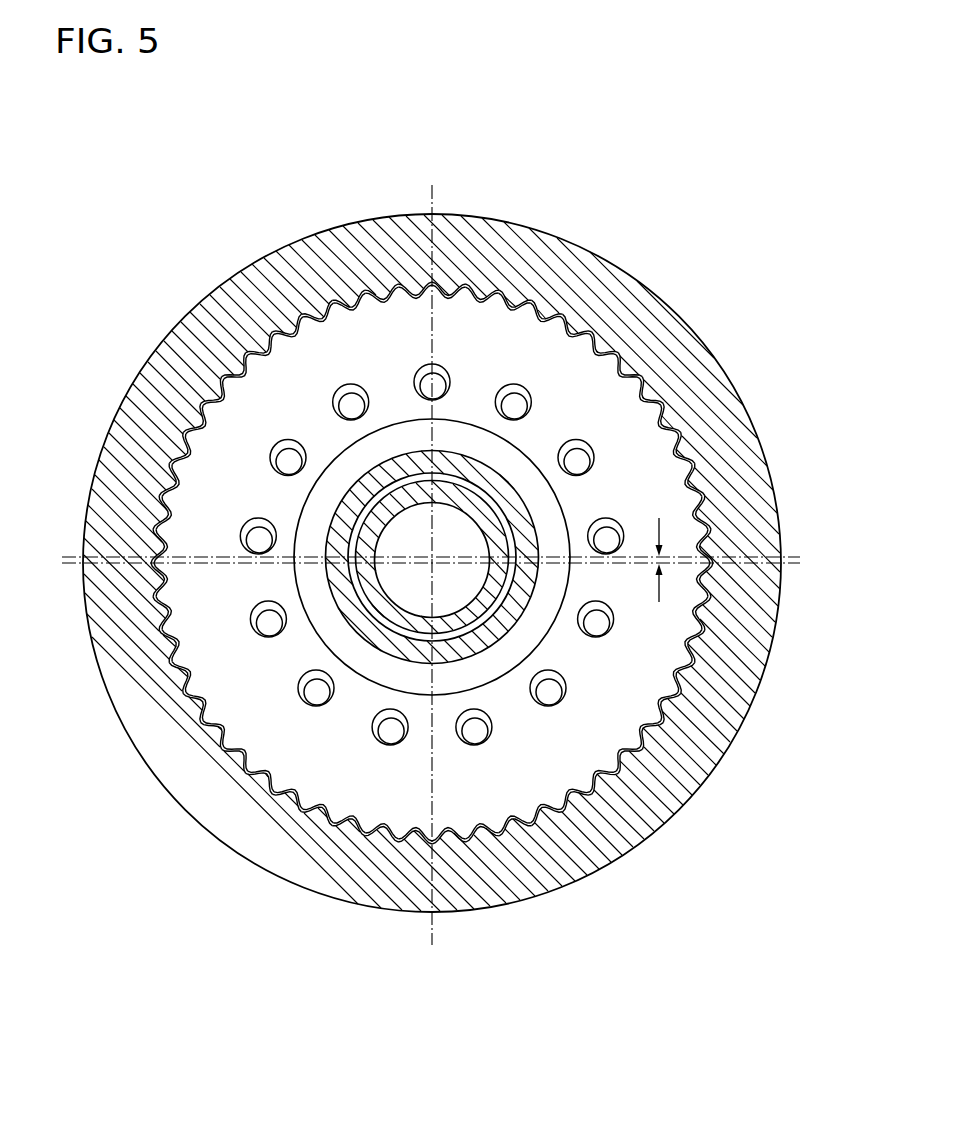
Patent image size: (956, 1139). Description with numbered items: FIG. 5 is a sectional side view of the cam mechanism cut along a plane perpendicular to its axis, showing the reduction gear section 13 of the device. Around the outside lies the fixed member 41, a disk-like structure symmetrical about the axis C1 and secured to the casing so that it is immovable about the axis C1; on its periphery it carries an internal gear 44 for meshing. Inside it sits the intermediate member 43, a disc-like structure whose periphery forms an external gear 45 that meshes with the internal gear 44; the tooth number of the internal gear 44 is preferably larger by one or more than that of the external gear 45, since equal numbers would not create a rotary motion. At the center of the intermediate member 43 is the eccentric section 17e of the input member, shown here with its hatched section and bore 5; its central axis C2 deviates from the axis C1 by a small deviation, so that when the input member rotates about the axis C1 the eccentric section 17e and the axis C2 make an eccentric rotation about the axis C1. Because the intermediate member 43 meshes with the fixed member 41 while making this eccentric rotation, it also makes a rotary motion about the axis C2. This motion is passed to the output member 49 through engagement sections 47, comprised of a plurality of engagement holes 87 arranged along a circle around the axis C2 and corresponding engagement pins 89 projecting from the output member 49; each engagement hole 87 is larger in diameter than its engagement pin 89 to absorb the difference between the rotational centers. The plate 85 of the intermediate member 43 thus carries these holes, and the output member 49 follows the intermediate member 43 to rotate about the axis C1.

The gear device 13 is at (441, 138).
The fixed member 41 is at (461, 538).
The intermediate member 43 is at (605, 519).
The internal gear 44 is at (583, 358).
The external gear 45 is at (705, 522).
The engagement section 47 is at (352, 370).
The output member 49 is at (548, 712).
The flange plate 85 is at (463, 437).
The engagement hole 87 is at (247, 540).
The engagement pin 89 is at (265, 623).
The eccentric body 5 is at (373, 595).
The eccentric section 17e is at (368, 652).
The axis C1 is at (433, 563).
The central axis of the eccentric section C2 is at (433, 557).